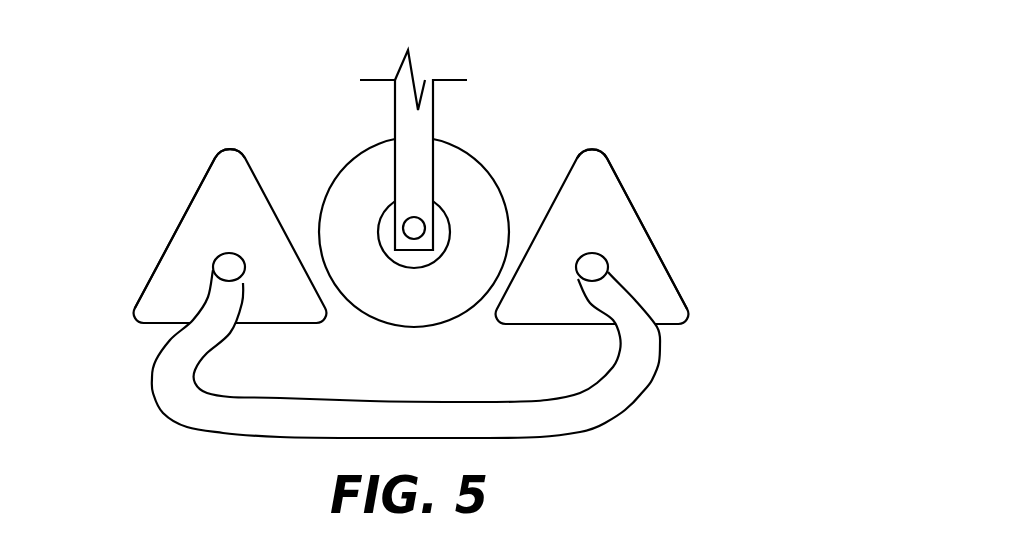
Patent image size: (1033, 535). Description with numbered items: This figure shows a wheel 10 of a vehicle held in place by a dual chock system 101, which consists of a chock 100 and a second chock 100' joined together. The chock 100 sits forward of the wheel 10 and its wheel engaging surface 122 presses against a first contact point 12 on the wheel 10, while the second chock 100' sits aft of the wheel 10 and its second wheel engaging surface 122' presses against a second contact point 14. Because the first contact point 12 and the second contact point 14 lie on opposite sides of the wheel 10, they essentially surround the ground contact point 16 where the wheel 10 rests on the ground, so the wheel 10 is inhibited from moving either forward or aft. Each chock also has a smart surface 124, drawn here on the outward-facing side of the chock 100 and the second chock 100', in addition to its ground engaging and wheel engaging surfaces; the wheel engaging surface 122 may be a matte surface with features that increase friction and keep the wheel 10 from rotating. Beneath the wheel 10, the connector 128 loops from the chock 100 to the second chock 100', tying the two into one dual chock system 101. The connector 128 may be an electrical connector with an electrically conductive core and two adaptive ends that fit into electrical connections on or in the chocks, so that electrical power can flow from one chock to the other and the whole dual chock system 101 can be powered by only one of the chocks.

The wheel 10 is at (505, 141).
The first contact point 12 is at (318, 230).
The second contact point 14 is at (510, 233).
The ground contact point 16 is at (413, 327).
The chock 100 is at (180, 236).
The second chock 100' is at (618, 202).
The dual chock system 101 is at (239, 68).
The wheel engaging surface 122 is at (221, 131).
The second wheel engaging surface 122' is at (604, 133).
The smart surface 124 is at (196, 192).
The connector 128 is at (637, 378).